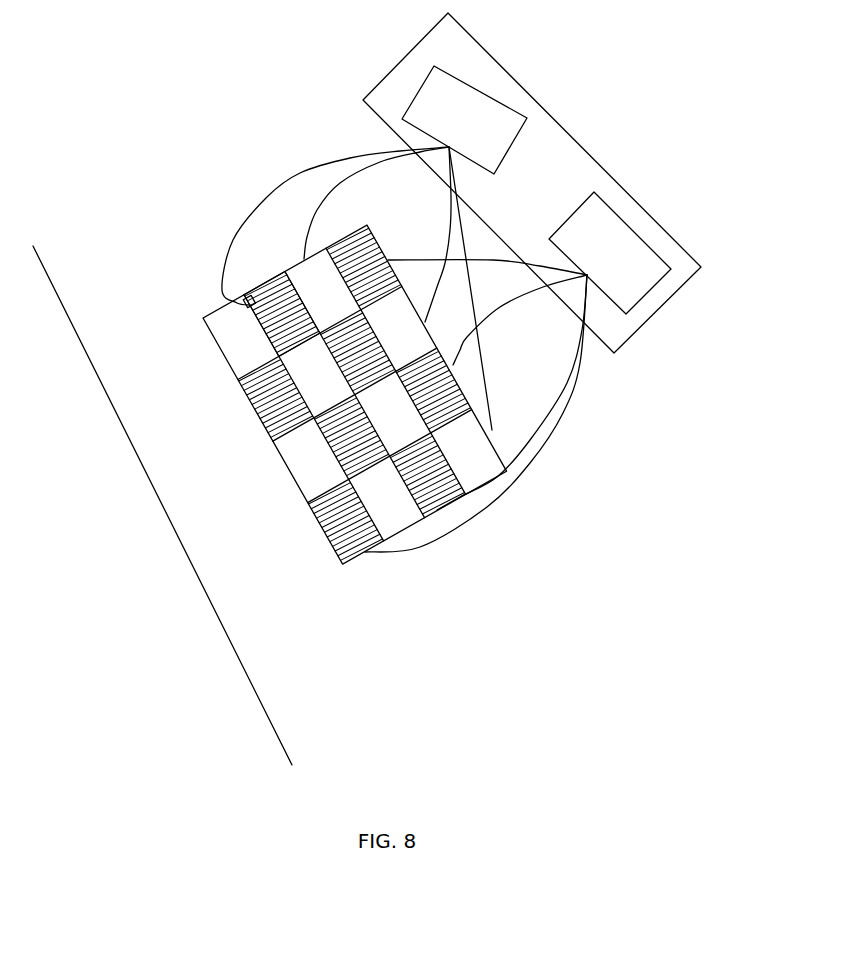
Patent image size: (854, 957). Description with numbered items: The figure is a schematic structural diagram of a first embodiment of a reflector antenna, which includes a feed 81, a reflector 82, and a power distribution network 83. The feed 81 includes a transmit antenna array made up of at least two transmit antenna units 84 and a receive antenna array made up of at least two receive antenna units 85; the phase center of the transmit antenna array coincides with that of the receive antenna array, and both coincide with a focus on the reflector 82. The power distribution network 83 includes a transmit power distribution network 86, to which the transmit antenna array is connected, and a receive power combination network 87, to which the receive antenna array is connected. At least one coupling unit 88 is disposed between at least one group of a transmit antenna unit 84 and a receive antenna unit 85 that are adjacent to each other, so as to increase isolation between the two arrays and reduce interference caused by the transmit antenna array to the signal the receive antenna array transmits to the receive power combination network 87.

The feed 81 is at (318, 407).
The reflector 82 is at (273, 727).
The power distribution network 83 is at (650, 323).
The transmit antenna unit 84 is at (220, 347).
The receive antenna unit 85 is at (277, 274).
The transmit power distribution network 86 is at (418, 90).
The receive power combination network 87 is at (637, 225).
The coupling unit 88 is at (247, 307).